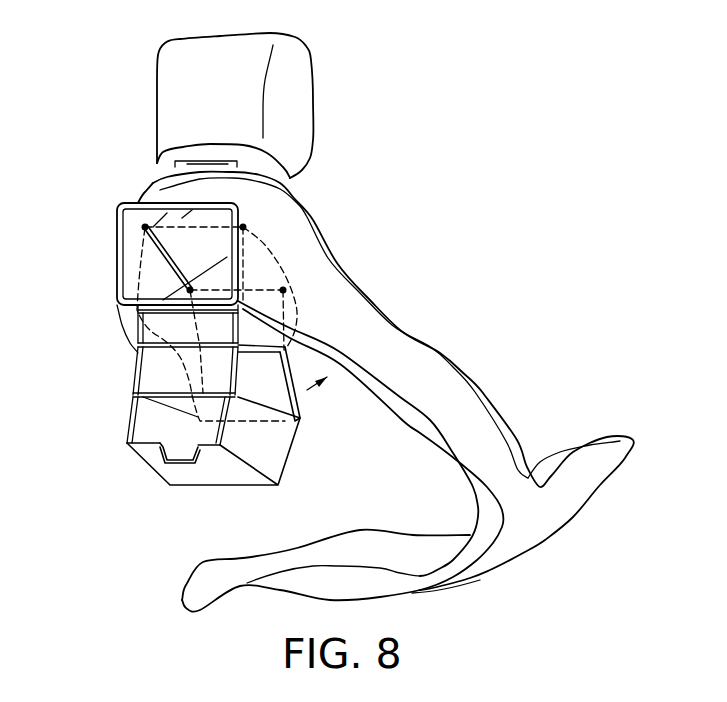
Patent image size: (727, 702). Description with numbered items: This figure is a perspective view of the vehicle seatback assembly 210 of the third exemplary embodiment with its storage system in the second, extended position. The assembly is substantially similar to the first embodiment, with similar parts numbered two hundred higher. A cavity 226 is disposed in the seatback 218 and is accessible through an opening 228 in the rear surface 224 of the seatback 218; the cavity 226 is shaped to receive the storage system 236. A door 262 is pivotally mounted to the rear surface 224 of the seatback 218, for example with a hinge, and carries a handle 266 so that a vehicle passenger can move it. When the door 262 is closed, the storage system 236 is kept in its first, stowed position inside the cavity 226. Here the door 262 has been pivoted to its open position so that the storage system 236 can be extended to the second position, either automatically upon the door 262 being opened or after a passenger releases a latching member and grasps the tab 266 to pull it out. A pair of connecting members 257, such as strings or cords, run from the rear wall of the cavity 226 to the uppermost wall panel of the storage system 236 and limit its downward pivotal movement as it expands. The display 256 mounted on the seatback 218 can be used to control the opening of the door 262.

The vehicle seatback assembly 210 is at (458, 216).
The seatback 218 is at (483, 378).
The rear surface 224 is at (330, 493).
The cavity 226 is at (125, 273).
The opening 228 is at (267, 337).
The storage system 236 is at (127, 417).
The display 256 is at (120, 233).
The connecting members 257 is at (122, 273).
The door 262 is at (302, 408).
The handle 266 is at (172, 458).